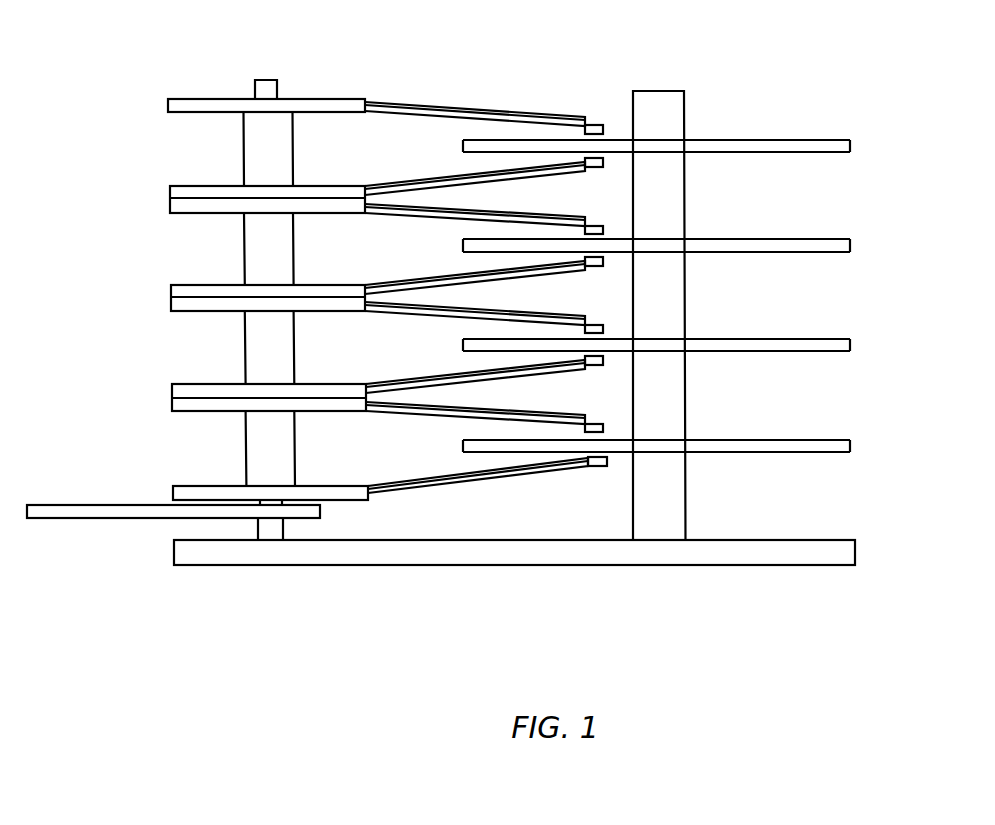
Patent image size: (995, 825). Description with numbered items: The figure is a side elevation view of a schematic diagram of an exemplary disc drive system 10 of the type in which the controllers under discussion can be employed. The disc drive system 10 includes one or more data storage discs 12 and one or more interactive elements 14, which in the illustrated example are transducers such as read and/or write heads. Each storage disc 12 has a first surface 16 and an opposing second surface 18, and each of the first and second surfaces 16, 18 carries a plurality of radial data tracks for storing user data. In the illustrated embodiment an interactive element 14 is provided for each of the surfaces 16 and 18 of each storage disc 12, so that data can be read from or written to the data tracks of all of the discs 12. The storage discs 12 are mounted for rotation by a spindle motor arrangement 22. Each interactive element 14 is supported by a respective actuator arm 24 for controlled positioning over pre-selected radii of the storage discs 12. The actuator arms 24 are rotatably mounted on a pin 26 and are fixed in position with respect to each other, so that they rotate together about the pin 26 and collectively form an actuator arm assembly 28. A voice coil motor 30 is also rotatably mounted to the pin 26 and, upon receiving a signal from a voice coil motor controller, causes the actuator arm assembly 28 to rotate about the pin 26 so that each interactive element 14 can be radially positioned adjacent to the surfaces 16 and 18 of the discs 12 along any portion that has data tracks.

The disc drive system 10 is at (443, 30).
The data storage disc 12 is at (850, 141).
The interactive element 14 is at (605, 131).
The first surface 16 is at (757, 139).
The second surface 18 is at (758, 153).
The spindle motor arrangement 22 is at (683, 91).
The actuator arm 24 is at (429, 107).
The pin 26 is at (265, 81).
The actuator arm assembly 28 is at (152, 249).
The voice coil motor 30 is at (57, 505).